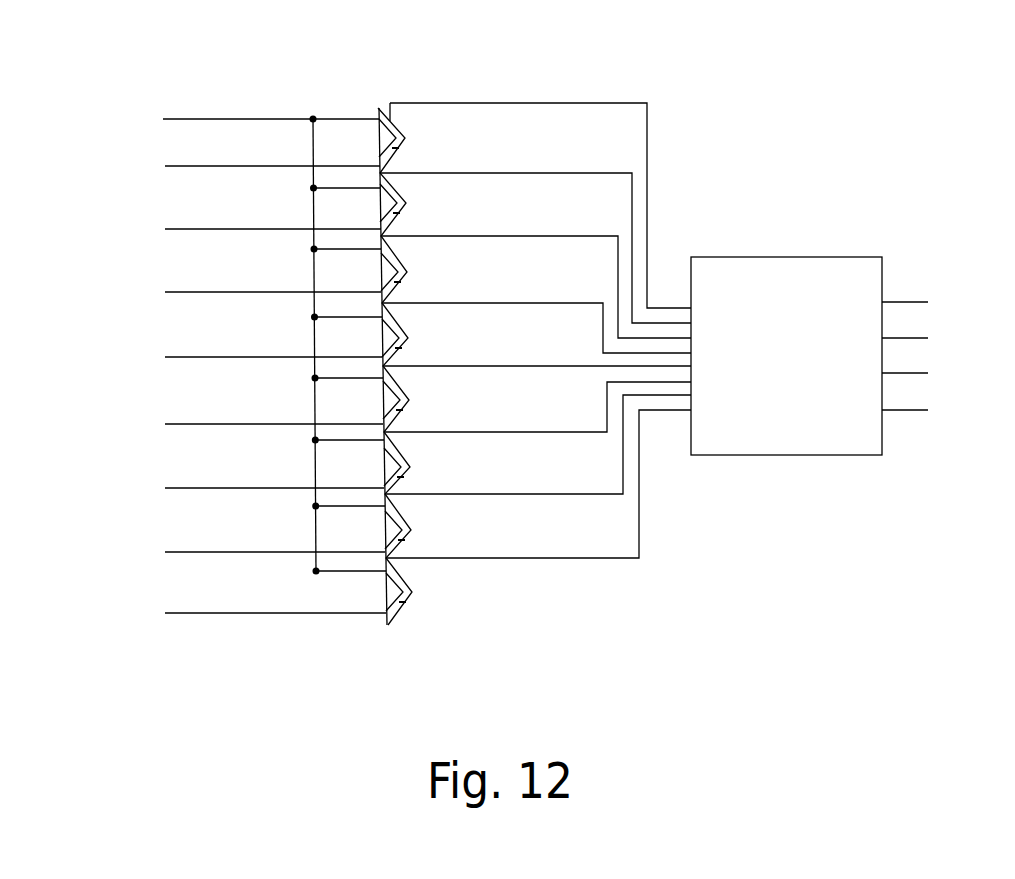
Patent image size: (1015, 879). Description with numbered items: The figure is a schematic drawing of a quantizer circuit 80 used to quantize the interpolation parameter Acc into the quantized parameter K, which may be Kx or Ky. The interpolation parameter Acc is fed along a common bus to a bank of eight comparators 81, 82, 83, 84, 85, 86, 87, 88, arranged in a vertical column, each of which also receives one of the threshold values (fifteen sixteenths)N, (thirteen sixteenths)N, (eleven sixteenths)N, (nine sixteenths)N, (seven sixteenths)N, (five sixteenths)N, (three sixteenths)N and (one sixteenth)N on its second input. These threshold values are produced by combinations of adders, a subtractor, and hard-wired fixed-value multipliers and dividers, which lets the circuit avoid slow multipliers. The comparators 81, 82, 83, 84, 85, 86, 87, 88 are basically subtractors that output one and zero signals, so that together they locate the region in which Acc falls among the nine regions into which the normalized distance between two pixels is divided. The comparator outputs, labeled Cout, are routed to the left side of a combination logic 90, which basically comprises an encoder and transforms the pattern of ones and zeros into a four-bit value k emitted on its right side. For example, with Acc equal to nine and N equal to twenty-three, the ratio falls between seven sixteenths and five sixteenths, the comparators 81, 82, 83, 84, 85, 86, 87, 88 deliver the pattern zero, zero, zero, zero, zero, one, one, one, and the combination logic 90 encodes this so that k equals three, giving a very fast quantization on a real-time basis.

The quantizer circuit 80 is at (661, 102).
The comparator 81 is at (405, 138).
The comparator 82 is at (406, 203).
The comparator 83 is at (407, 272).
The comparator 84 is at (408, 338).
The comparator 85 is at (409, 400).
The comparator 86 is at (410, 467).
The comparator 87 is at (411, 530).
The comparator 88 is at (406, 604).
The combination logic 90 is at (782, 257).